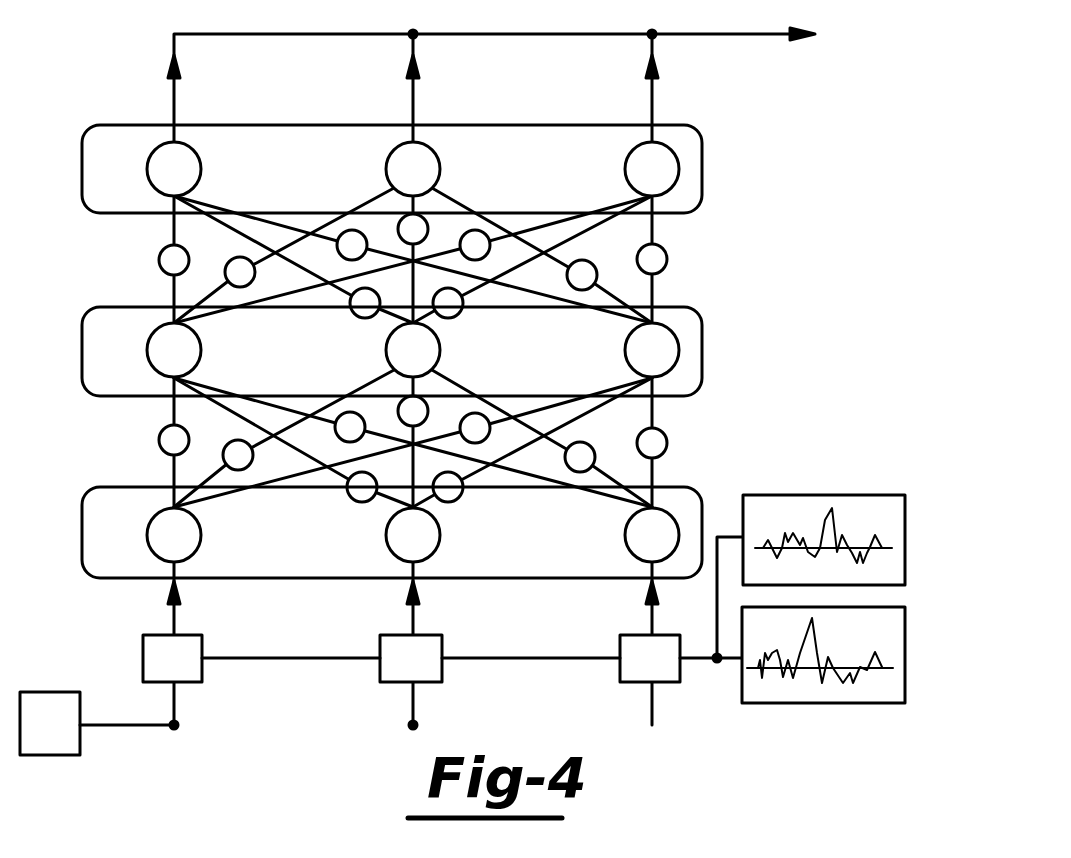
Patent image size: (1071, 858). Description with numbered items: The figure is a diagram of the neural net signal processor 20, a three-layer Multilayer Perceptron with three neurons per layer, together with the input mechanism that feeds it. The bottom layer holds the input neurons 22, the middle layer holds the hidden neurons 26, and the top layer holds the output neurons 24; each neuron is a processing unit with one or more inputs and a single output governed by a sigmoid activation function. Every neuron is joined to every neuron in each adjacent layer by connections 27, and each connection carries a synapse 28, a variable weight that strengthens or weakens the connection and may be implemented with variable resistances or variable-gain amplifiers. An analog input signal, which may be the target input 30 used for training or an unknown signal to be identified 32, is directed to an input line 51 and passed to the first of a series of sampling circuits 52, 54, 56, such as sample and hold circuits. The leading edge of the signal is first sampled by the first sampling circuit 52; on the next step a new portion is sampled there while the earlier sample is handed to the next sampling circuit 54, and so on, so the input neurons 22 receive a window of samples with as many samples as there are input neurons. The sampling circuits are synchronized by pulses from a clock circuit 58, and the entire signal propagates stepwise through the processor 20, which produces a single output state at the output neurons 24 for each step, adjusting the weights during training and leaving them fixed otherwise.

The neural net signal processor 20 is at (60, 142).
The input neurons 22 is at (202, 533).
The output neurons 24 is at (388, 160).
The hidden neurons 26 is at (386, 350).
The connections 27 is at (174, 237).
The synapses 28 is at (595, 262).
The target input 30 is at (822, 494).
The signal to be identified 32 is at (752, 705).
The input line 51 is at (733, 667).
The first sampling circuit 52 is at (620, 670).
The second sampling circuit 54 is at (380, 675).
The third sampling circuit 56 is at (143, 663).
The clock circuit 58 is at (82, 743).